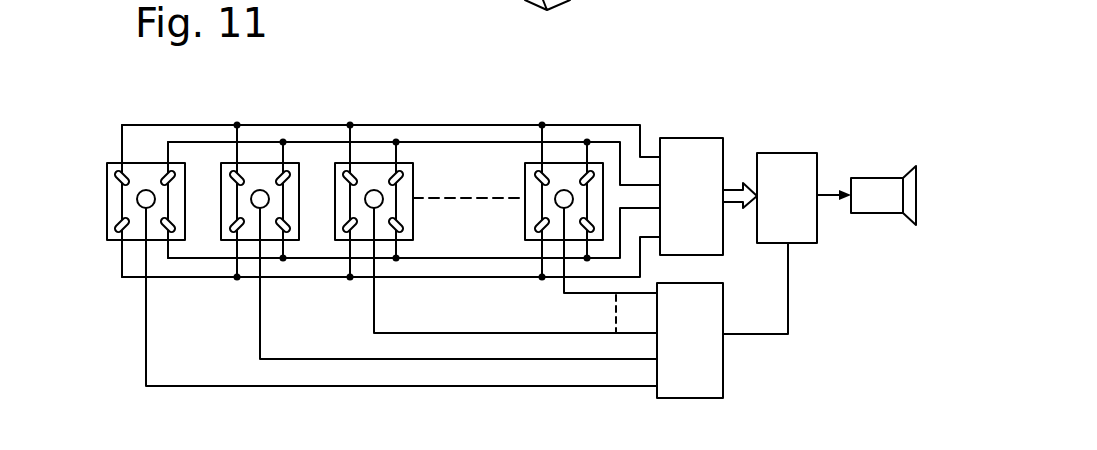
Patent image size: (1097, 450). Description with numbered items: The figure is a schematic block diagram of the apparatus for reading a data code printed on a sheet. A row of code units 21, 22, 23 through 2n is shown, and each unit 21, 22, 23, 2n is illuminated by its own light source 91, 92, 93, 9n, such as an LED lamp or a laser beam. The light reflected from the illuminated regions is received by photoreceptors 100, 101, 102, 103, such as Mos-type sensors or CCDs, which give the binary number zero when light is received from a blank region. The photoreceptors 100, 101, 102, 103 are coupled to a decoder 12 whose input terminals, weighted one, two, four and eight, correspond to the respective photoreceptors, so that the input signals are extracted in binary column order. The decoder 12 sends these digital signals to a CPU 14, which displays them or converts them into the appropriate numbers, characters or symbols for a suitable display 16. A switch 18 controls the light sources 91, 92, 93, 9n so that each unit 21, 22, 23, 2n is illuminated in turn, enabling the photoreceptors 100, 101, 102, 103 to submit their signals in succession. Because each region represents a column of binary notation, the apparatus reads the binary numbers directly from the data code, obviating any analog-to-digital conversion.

The unit 21 is at (150, 205).
The unit 22 is at (275, 176).
The unit 23 is at (392, 174).
The unit 2n is at (541, 168).
The light source 91 is at (146, 189).
The light source 92 is at (260, 189).
The light source 93 is at (374, 189).
The light source 9n is at (564, 189).
The photoreceptor 100 is at (112, 181).
The photoreceptor 101 is at (112, 223).
The photoreceptor 102 is at (174, 178).
The photoreceptor 103 is at (177, 224).
The decoder 12 is at (693, 146).
The CPU 14 is at (787, 152).
The display 16 is at (873, 177).
The switch 18 is at (710, 372).